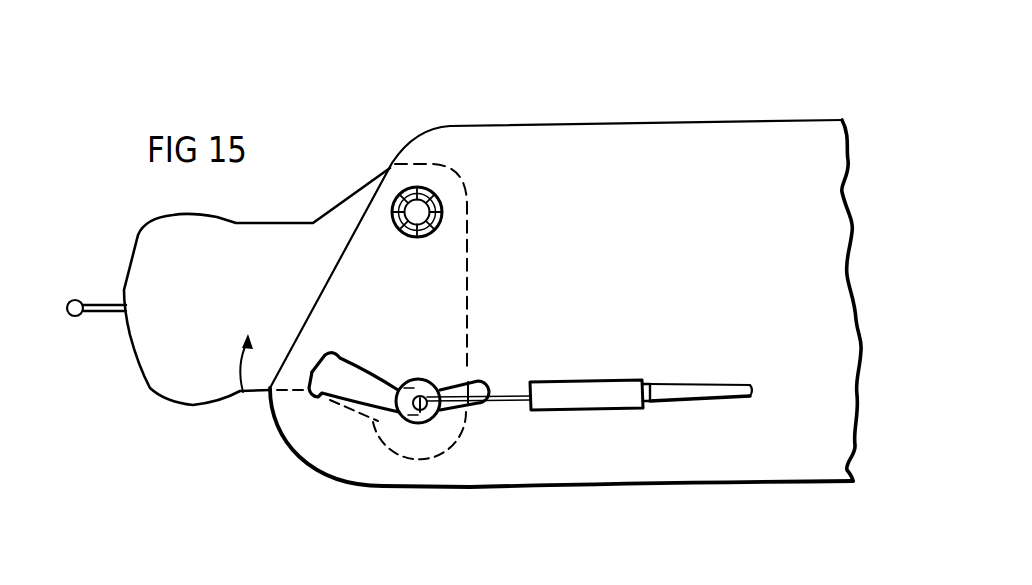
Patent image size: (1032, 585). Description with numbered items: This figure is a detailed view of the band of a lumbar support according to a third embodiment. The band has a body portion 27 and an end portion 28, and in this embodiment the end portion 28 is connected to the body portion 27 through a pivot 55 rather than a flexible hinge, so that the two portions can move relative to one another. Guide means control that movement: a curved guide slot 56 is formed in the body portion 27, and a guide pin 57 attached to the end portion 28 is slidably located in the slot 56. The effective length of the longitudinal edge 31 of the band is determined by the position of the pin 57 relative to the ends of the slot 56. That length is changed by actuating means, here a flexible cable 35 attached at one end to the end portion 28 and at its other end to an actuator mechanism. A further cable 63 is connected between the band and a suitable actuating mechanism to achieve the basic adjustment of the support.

The body portion 27 is at (603, 152).
The end portion 28 is at (244, 396).
The longitudinal edge 31 is at (705, 485).
The flexible cable 35 is at (692, 370).
The pivot 55 is at (417, 212).
The curved guide slot 56 is at (377, 403).
The guide pin 57 is at (420, 410).
The cable 63 is at (101, 288).